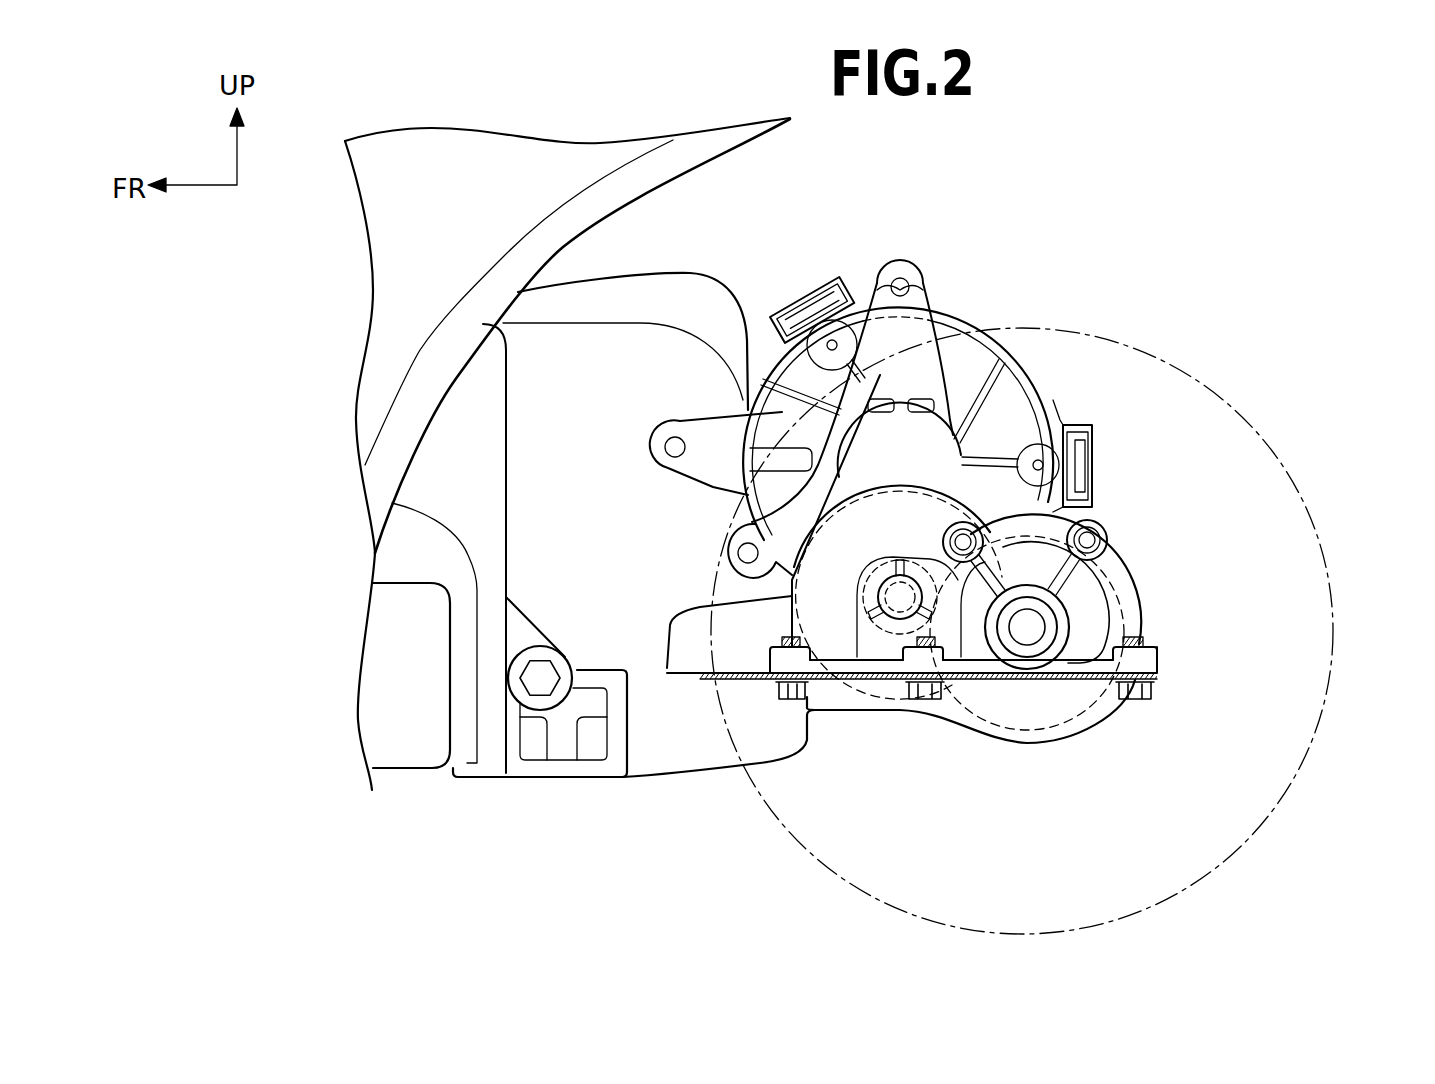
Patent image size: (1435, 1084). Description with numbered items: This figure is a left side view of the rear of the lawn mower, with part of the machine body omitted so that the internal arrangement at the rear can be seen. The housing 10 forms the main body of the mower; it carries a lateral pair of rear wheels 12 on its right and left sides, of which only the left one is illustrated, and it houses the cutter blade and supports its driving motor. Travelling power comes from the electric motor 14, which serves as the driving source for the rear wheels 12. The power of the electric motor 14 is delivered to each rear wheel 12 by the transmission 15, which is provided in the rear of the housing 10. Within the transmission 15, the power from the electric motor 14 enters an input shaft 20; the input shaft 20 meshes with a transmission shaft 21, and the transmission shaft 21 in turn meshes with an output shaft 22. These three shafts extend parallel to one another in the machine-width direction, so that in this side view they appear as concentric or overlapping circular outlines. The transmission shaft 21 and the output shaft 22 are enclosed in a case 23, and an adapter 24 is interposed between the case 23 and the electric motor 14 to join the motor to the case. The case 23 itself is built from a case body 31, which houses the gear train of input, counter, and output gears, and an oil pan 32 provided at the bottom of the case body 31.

The housing 10 is at (433, 153).
The rear wheel 12 is at (1203, 378).
The electric motor 14 is at (933, 320).
The transmission 15 is at (1133, 561).
The input shaft 20 is at (965, 485).
The transmission shaft 21 is at (880, 682).
The output shaft 22 is at (1098, 712).
The case 23 is at (1138, 596).
The adapter 24 is at (1022, 390).
The case body 31 is at (1131, 615).
The oil pan 32 is at (983, 740).